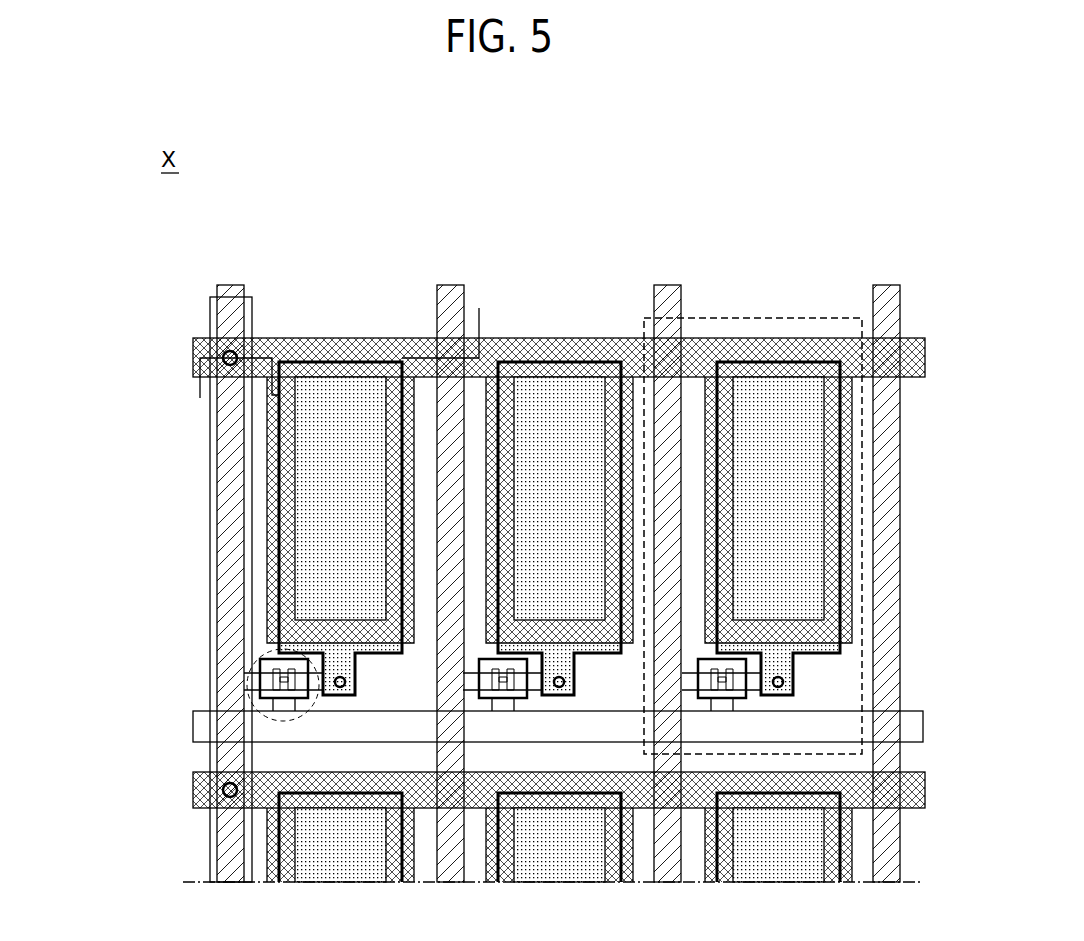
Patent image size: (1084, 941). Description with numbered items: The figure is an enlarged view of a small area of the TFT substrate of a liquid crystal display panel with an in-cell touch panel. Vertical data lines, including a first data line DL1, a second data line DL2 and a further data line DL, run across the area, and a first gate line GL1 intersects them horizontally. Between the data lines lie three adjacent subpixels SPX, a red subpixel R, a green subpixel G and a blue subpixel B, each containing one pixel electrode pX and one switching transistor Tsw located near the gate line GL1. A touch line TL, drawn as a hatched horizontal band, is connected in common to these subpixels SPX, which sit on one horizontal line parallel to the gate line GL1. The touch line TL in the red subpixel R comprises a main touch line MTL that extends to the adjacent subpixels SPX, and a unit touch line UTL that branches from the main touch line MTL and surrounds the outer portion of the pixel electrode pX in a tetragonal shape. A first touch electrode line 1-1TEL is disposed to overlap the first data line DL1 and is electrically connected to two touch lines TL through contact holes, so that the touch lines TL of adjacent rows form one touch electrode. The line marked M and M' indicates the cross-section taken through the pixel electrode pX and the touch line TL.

The first data line DL1 is at (238, 285).
The second data line DL2 is at (450, 285).
The data line DL is at (216, 515).
The main touch line MTL is at (313, 340).
The pixel electrode pX is at (372, 360).
The section line start M is at (234, 390).
The section line end M' is at (447, 321).
The subpixel SPX is at (797, 318).
The touch line TL is at (193, 358).
The unit touch line UTL is at (267, 453).
The switching transistor Tsw is at (255, 655).
The first gate line GL1 is at (193, 727).
The 1-1st touch electrode line 1-1TEL is at (210, 852).
The red subpixel R is at (340, 498).
The green subpixel G is at (559, 622).
The blue subpixel B is at (778, 622).